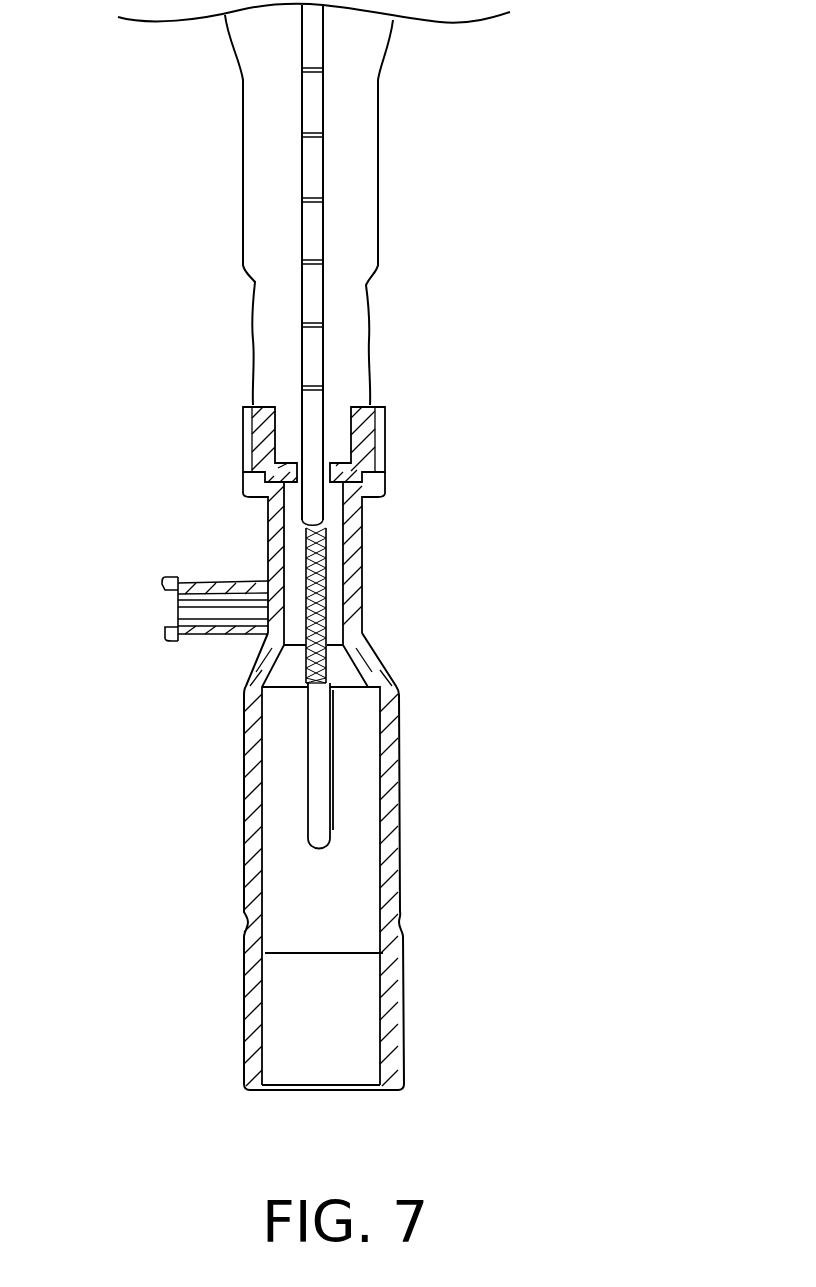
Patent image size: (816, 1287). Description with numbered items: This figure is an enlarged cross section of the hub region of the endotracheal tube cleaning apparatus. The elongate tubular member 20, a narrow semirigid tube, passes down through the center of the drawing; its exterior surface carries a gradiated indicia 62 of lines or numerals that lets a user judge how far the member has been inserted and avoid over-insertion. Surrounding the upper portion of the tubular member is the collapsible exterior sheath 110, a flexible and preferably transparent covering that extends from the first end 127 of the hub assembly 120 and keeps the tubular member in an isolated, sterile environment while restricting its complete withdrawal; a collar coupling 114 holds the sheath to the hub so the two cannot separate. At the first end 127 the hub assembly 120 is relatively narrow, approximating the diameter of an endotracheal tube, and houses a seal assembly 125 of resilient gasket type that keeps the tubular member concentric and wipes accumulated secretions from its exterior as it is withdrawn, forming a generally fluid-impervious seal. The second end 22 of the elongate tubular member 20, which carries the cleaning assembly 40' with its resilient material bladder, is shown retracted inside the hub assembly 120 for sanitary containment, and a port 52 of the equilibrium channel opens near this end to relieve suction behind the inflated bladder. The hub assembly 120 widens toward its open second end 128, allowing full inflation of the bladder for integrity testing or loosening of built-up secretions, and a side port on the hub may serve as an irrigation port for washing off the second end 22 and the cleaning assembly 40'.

The exterior sheath 110 is at (378, 83).
The gradiated indicia 62 is at (328, 190).
The elongate tubular member 20 is at (313, 437).
The collar coupling 114 is at (378, 456).
The seal assembly 125 is at (337, 462).
The first end of the hub assembly 127 is at (265, 495).
The second end of the elongate tubular member 22 is at (165, 636).
The cleaning assembly 40' is at (364, 605).
The hub assembly 120 is at (380, 861).
The port of the equilibrium channel 52 is at (318, 843).
The second end of the hub assembly 128 is at (404, 1043).